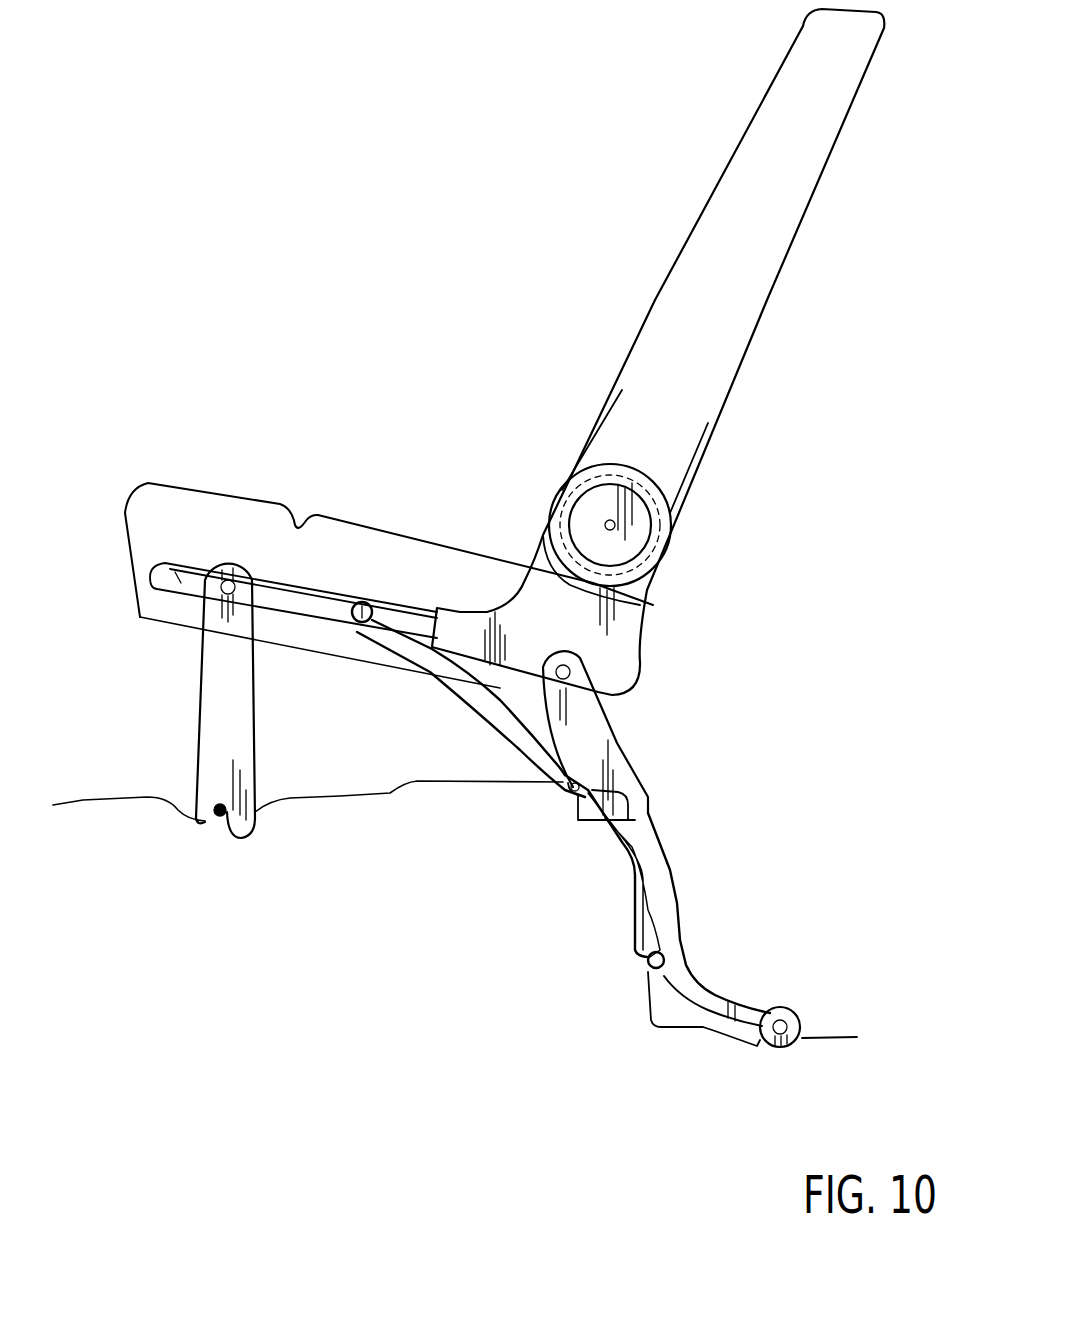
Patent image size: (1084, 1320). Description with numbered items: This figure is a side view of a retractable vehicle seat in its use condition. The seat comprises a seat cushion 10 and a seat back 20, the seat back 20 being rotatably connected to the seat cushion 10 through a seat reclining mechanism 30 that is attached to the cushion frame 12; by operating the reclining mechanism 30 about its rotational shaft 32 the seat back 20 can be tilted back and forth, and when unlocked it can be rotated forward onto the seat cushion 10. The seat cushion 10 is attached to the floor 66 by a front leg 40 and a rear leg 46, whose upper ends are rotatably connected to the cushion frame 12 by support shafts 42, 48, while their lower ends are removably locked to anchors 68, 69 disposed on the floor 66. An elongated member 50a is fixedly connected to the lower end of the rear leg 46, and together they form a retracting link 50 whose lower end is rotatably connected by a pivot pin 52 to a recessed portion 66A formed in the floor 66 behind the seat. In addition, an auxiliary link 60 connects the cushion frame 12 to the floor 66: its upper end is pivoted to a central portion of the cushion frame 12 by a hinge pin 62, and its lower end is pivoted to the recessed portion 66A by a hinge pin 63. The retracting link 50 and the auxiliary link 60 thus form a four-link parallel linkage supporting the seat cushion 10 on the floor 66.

The seat cushion 10 is at (351, 548).
The cushion frame 12 is at (310, 602).
The seat back 20 is at (740, 322).
The seat reclining mechanism 30 is at (655, 540).
The rotational shaft 32 is at (608, 520).
The front leg 40 is at (215, 690).
The support shaft 42 is at (229, 580).
The rear leg 46 is at (612, 737).
The support shaft 48 is at (571, 672).
The retracting link 50 is at (668, 900).
The elongated member 50a is at (685, 896).
The pivot pin 52 is at (782, 1020).
The auxiliary link 60 is at (462, 680).
The hinge pin 62 is at (368, 604).
The hinge pin 63 is at (667, 959).
The floor 66 is at (90, 800).
The recessed portion 66A is at (853, 1030).
The anchor 68 is at (220, 818).
The anchor 69 is at (580, 795).